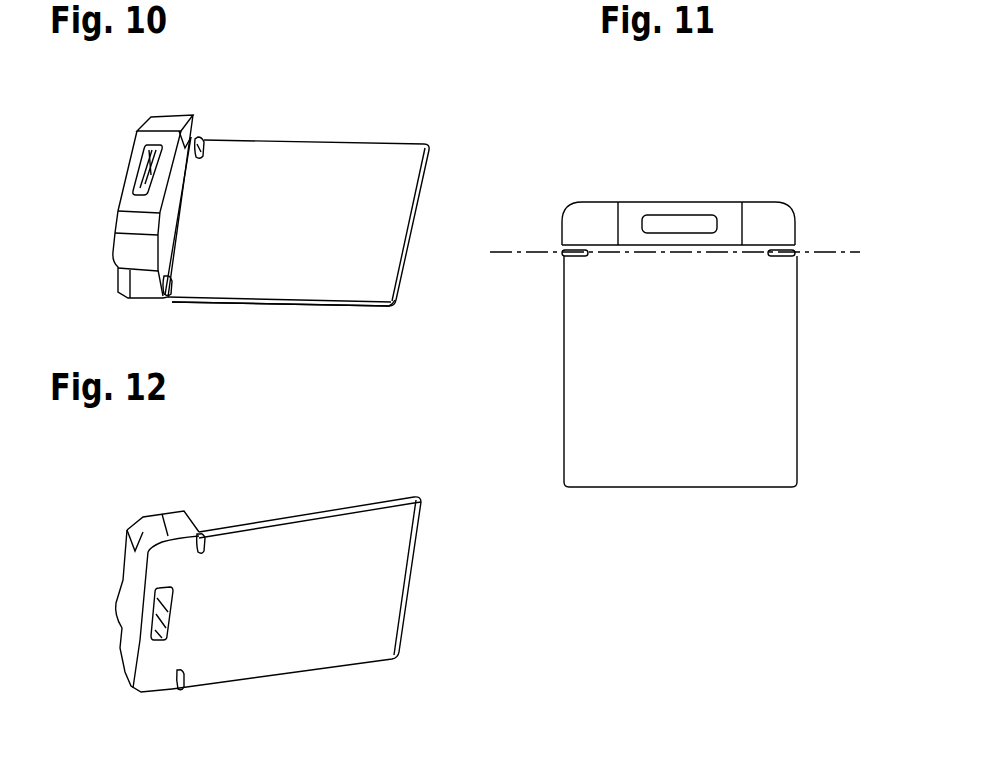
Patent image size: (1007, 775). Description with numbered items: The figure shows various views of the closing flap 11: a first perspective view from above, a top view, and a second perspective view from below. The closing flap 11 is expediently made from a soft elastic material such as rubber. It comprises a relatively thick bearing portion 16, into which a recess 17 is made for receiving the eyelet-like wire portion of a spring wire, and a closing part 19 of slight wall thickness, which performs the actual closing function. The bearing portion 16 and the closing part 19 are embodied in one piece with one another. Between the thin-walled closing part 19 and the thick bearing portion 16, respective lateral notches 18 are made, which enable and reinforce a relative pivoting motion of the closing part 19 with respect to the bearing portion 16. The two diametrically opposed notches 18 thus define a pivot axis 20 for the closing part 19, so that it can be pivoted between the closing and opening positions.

In FIG. 10, the closing flap 11 is at (290, 114).
In FIG. 11, the closing flap 11 is at (672, 192).
In FIG. 12, the closing flap 11 is at (286, 510).
In FIG. 10, the bearing portion 16 is at (164, 124).
In FIG. 11, the bearing portion 16 is at (600, 218).
In FIG. 12, the bearing portion 16 is at (129, 561).
In FIG. 10, the recess 17 is at (141, 178).
In FIG. 11, the recess 17 is at (714, 215).
In FIG. 12, the recess 17 is at (158, 594).
In FIG. 10, the lateral notches 18 is at (205, 148).
In FIG. 11, the lateral notches 18 is at (568, 255).
In FIG. 12, the lateral notches 18 is at (202, 534).
In FIG. 10, the closing part 19 is at (391, 150).
In FIG. 11, the closing part 19 is at (688, 470).
In FIG. 12, the closing part 19 is at (388, 625).
In FIG. 11, the pivot axis 20 is at (830, 250).